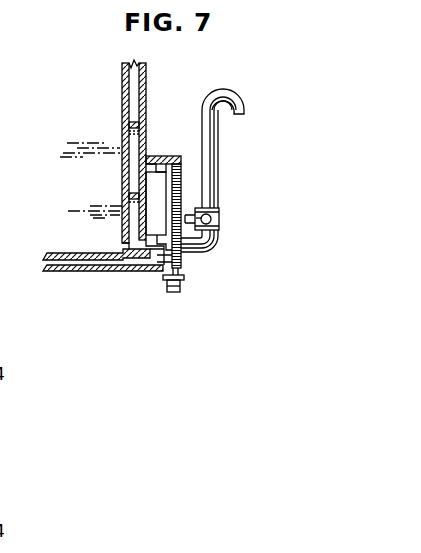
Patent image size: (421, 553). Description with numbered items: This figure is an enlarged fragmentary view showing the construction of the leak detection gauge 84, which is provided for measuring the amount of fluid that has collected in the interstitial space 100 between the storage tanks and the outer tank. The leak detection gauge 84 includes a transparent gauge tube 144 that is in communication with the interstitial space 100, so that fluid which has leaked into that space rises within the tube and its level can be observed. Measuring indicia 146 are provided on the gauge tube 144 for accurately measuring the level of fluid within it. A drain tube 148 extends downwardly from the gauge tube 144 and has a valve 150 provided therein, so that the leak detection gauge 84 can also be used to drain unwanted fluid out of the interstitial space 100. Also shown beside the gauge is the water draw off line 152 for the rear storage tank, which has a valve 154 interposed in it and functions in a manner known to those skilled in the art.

The interstitial space 100 is at (137, 108).
The leak detection gauge 84 is at (167, 133).
The transparent gauge tube 144 is at (183, 170).
The measuring indicia 146 is at (181, 198).
The drain tube 148 is at (174, 293).
The valve 150 is at (163, 273).
The water draw off line 152 is at (203, 249).
The valve 154 is at (220, 218).